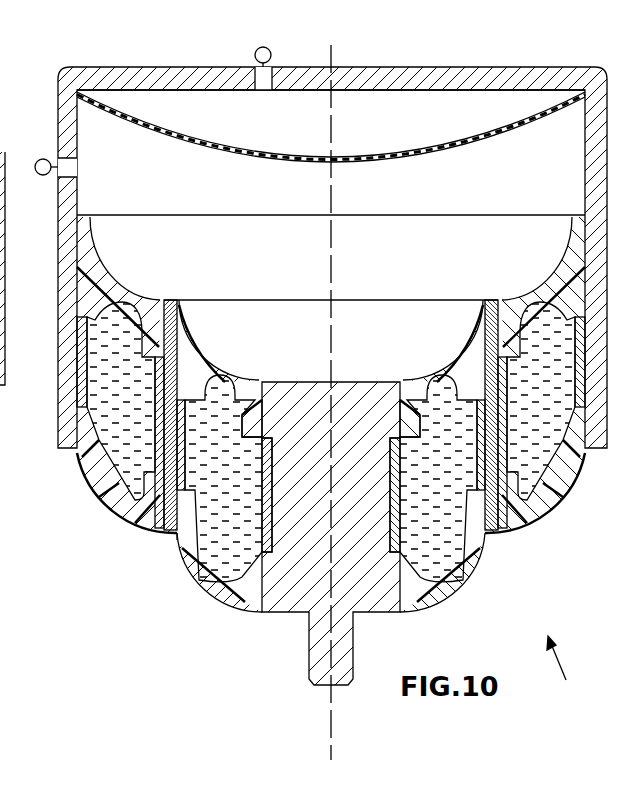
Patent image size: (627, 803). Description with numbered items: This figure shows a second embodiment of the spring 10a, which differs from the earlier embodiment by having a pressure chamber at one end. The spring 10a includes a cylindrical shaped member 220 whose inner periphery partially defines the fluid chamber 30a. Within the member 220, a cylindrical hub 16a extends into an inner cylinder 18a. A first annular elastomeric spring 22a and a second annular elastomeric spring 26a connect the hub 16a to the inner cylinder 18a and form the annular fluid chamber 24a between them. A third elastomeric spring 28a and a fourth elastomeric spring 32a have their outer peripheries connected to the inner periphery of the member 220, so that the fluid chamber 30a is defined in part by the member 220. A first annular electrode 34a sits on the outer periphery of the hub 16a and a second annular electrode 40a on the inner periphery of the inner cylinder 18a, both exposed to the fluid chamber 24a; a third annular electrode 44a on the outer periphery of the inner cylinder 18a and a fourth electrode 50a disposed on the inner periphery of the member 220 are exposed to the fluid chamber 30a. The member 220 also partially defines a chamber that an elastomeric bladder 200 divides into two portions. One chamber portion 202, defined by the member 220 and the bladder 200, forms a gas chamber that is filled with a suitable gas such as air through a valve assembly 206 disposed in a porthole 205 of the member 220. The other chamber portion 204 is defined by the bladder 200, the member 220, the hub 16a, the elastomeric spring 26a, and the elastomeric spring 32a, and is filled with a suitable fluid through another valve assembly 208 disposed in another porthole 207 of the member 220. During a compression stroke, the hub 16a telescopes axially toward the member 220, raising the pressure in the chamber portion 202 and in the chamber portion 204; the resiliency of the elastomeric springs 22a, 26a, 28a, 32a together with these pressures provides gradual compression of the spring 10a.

The spring 10a is at (573, 669).
The hub 16a is at (292, 588).
The inner cylinder 18a is at (178, 330).
The first annular shaped elastomeric spring 22a is at (193, 578).
The annular shaped fluid chamber 24a is at (232, 520).
The second annular shaped elastomeric spring 26a is at (218, 354).
The third annular shaped elastomeric spring 28a is at (102, 502).
The second annular shaped fluid chamber 30a is at (124, 457).
The fourth annular shaped elastomeric spring 32a is at (125, 273).
The first annular shaped electrode 34a is at (250, 545).
The second annular shaped electrode 40a is at (181, 482).
The third annular shaped electrode 44a is at (93, 408).
The fourth annular shaped electrode 50a is at (80, 390).
The elastomeric bladder 200 is at (291, 160).
The chamber portion 202 is at (286, 128).
The chamber portion 204 is at (201, 198).
The porthole 205 is at (258, 88).
The valve assembly 206 is at (255, 53).
The porthole 207 is at (73, 172).
The valve assembly 208 is at (42, 176).
The cylindrical shaped member 220 is at (63, 138).